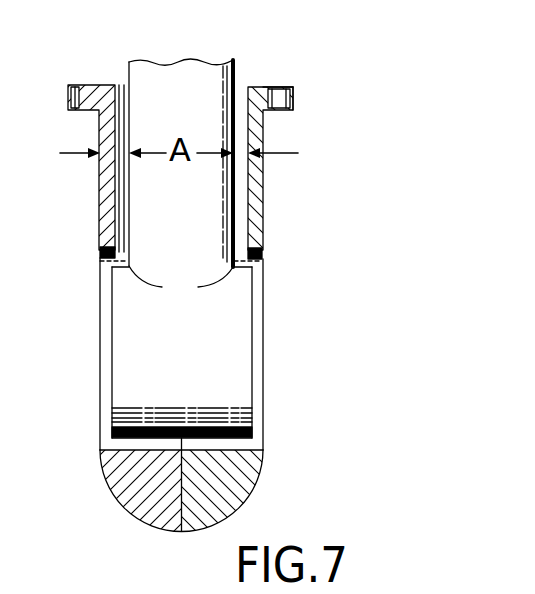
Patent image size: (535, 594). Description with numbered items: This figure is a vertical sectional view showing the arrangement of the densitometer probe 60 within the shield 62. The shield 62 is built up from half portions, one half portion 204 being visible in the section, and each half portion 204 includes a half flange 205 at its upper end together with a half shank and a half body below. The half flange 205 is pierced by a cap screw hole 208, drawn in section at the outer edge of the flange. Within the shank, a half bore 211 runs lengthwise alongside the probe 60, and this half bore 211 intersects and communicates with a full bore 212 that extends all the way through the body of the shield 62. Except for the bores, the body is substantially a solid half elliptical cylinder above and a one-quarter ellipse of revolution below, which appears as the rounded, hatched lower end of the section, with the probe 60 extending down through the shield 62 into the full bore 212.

The densitometer probe 60 is at (243, 65).
The shield 62 is at (86, 234).
The half portion 204 is at (268, 251).
The half flange 205 is at (294, 101).
The cap screw hole 208 is at (278, 91).
The half bore 211 is at (247, 212).
The full bore 212 is at (262, 354).